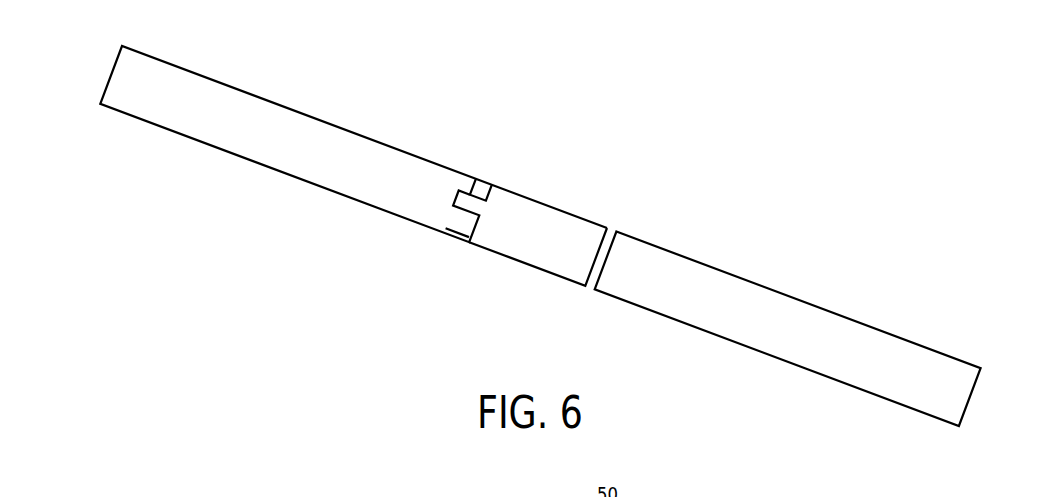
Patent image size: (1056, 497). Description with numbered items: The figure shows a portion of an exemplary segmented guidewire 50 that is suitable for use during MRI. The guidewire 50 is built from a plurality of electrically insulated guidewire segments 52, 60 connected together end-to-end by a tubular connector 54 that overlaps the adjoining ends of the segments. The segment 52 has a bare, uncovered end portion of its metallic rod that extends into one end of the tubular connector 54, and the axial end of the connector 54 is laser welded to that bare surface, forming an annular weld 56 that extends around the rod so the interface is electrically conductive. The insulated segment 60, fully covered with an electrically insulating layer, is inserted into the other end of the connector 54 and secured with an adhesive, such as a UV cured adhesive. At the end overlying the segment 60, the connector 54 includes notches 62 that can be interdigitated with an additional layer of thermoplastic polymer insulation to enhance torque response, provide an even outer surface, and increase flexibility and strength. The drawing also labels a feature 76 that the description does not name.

The segmented guidewire 50 is at (782, 148).
The guidewire segment 52 is at (786, 305).
The tubular connector 54 is at (537, 212).
The annular weld 56 is at (610, 240).
The insulated guidewire segment 60 is at (247, 107).
The notches 62 is at (474, 190).
The lip 76 is at (462, 232).